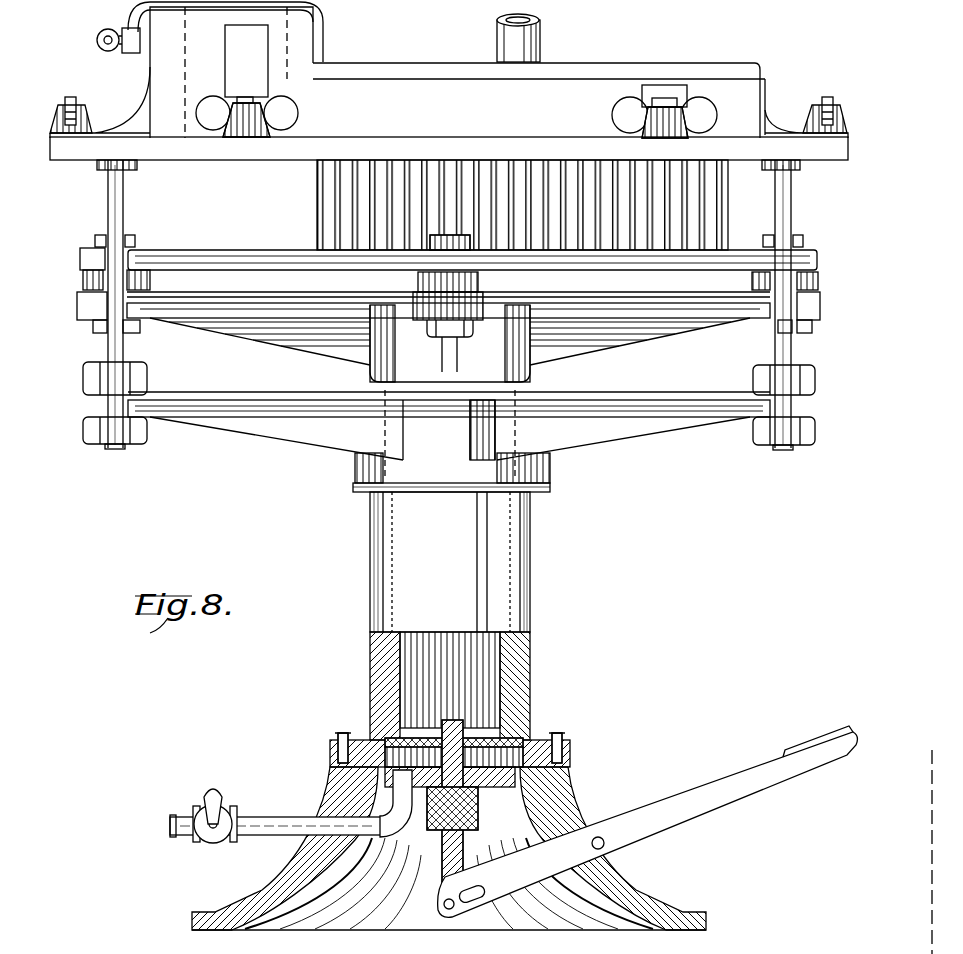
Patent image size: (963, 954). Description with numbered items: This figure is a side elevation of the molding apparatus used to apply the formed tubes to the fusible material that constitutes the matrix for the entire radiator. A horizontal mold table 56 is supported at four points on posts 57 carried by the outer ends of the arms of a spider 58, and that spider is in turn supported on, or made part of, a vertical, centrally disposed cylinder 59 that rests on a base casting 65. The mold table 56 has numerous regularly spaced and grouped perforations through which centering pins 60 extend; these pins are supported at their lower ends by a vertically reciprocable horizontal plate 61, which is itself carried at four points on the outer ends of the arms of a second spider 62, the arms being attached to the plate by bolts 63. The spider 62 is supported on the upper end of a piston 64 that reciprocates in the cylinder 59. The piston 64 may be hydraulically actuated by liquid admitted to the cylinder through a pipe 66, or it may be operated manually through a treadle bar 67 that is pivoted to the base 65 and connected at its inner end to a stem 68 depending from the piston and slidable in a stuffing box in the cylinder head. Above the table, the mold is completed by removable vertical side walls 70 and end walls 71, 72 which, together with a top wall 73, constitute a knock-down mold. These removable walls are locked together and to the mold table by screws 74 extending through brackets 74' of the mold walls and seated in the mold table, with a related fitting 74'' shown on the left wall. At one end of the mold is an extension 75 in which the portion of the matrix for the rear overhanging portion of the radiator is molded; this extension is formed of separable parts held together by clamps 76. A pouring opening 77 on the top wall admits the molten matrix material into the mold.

The mold table 56 is at (220, 152).
The posts 57 is at (108, 205).
The spider 58 is at (327, 433).
The cylinder 59 is at (530, 556).
The centering pins 60 is at (340, 216).
The horizontal plate 61 is at (223, 250).
The spider 62 is at (292, 337).
The bolts 63 is at (440, 340).
The piston 64 is at (500, 661).
The base casting 65 is at (563, 797).
The pipe 66 is at (267, 818).
The treadle bar 67 is at (694, 793).
The stem 68 is at (451, 857).
The side walls 70 is at (539, 108).
The end wall 71 is at (748, 96).
The end wall 72 is at (167, 90).
The top wall 73 is at (594, 65).
The screws 74 is at (448, 96).
The brackets 74' is at (449, 84).
The partition 74'' is at (238, 48).
The extension 75 is at (268, 36).
The clamps 76 is at (325, 4).
The pouring opening 77 is at (540, 38).